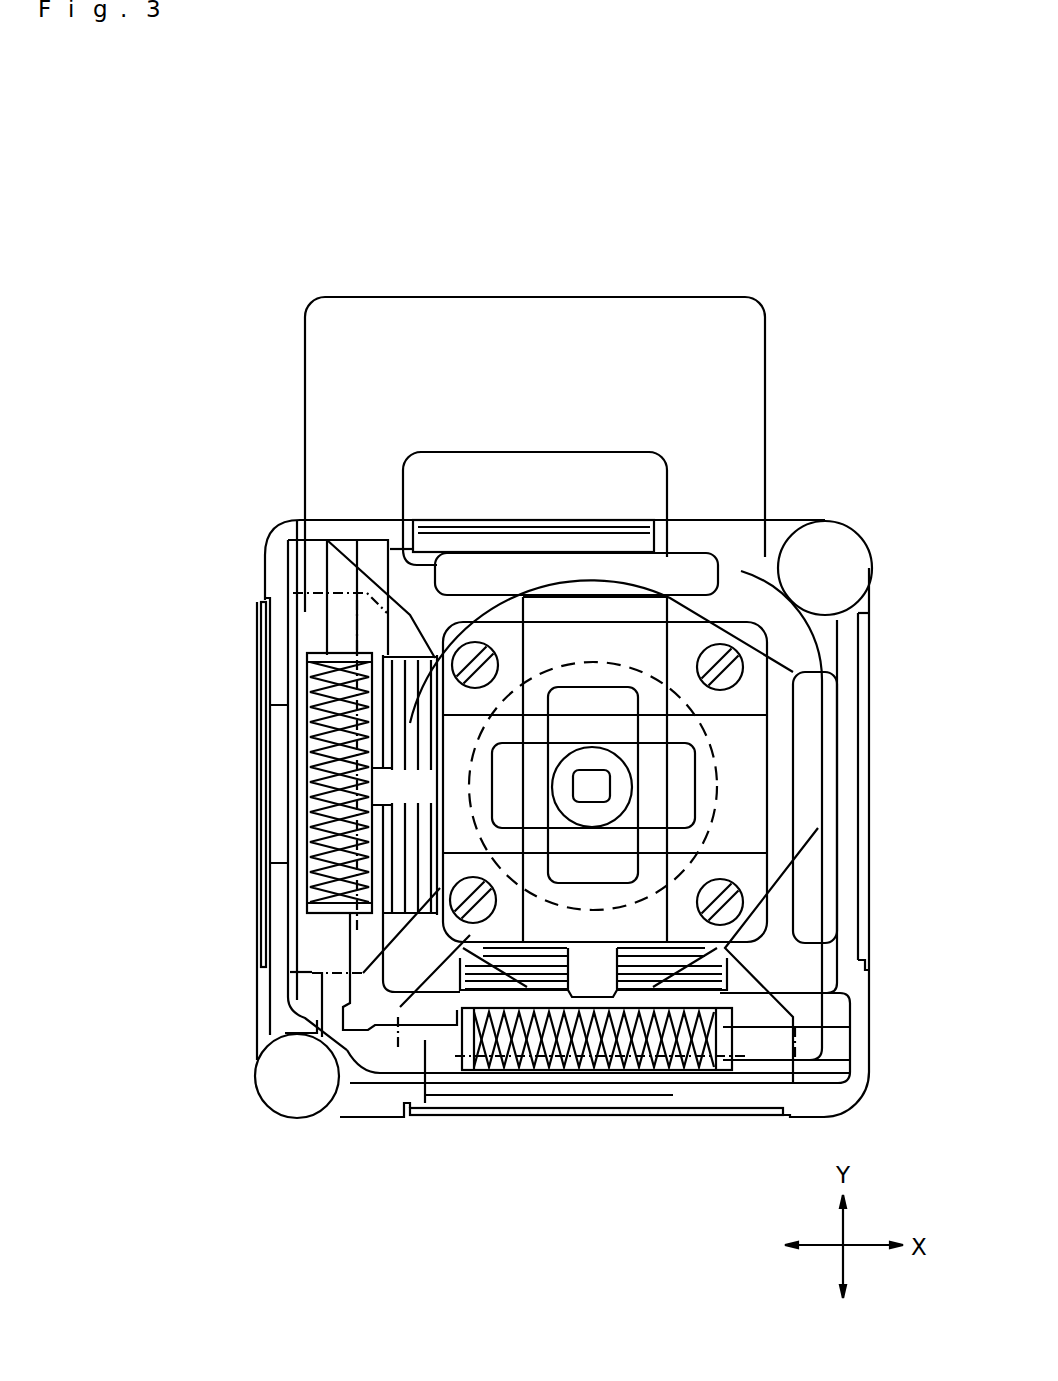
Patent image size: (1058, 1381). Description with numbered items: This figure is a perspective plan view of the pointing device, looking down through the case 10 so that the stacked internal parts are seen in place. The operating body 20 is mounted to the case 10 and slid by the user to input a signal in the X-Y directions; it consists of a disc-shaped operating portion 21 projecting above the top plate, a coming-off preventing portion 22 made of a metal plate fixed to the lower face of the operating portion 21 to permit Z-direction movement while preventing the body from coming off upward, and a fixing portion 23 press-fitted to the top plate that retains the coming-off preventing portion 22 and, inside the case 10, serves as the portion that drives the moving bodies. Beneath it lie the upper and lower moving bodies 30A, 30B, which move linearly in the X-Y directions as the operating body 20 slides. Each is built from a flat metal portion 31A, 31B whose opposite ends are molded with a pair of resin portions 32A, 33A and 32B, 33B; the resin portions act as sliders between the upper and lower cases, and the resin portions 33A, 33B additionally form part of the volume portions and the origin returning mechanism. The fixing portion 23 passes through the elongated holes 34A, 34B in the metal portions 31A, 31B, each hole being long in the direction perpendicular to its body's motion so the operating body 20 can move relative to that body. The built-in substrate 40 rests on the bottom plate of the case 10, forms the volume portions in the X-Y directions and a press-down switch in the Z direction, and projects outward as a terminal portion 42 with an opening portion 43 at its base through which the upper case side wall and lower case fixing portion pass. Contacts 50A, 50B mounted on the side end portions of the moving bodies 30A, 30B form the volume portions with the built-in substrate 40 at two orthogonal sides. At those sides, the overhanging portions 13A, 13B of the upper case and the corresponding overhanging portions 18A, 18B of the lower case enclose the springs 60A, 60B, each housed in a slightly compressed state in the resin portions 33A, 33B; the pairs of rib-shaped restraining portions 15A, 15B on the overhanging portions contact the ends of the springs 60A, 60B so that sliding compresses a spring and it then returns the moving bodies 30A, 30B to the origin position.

The case 10 is at (267, 1108).
The overhanging portion 13A is at (205, 784).
The overhanging portion 18A is at (257, 883).
The overhanging portion 13B is at (596, 870).
The overhanging portion 18B is at (472, 1115).
The restraining portions 15A is at (327, 627).
The restraining portions 15B is at (425, 1118).
The operating body 20 is at (440, 627).
The operating portion 21 is at (495, 615).
The coming-off preventing portion 22 is at (603, 662).
The fixing portion 23 is at (623, 772).
The moving body 30A is at (742, 863).
The moving body 30B is at (680, 662).
The metal portion 31A is at (743, 823).
The metal portion 31B is at (660, 607).
The resin portion 32A is at (810, 875).
The resin portion 32B is at (703, 565).
The resin portion 33A is at (307, 942).
The resin portion 33B is at (757, 1080).
The elongated hole 34A is at (685, 787).
The elongated hole 34B is at (580, 697).
The built-in substrate 40 is at (523, 405).
The terminal portion 42 is at (765, 352).
The opening portion 43 is at (563, 480).
The contact 50A is at (385, 800).
The contact 50B is at (585, 980).
The spring 60A is at (310, 757).
The spring 60B is at (625, 1080).